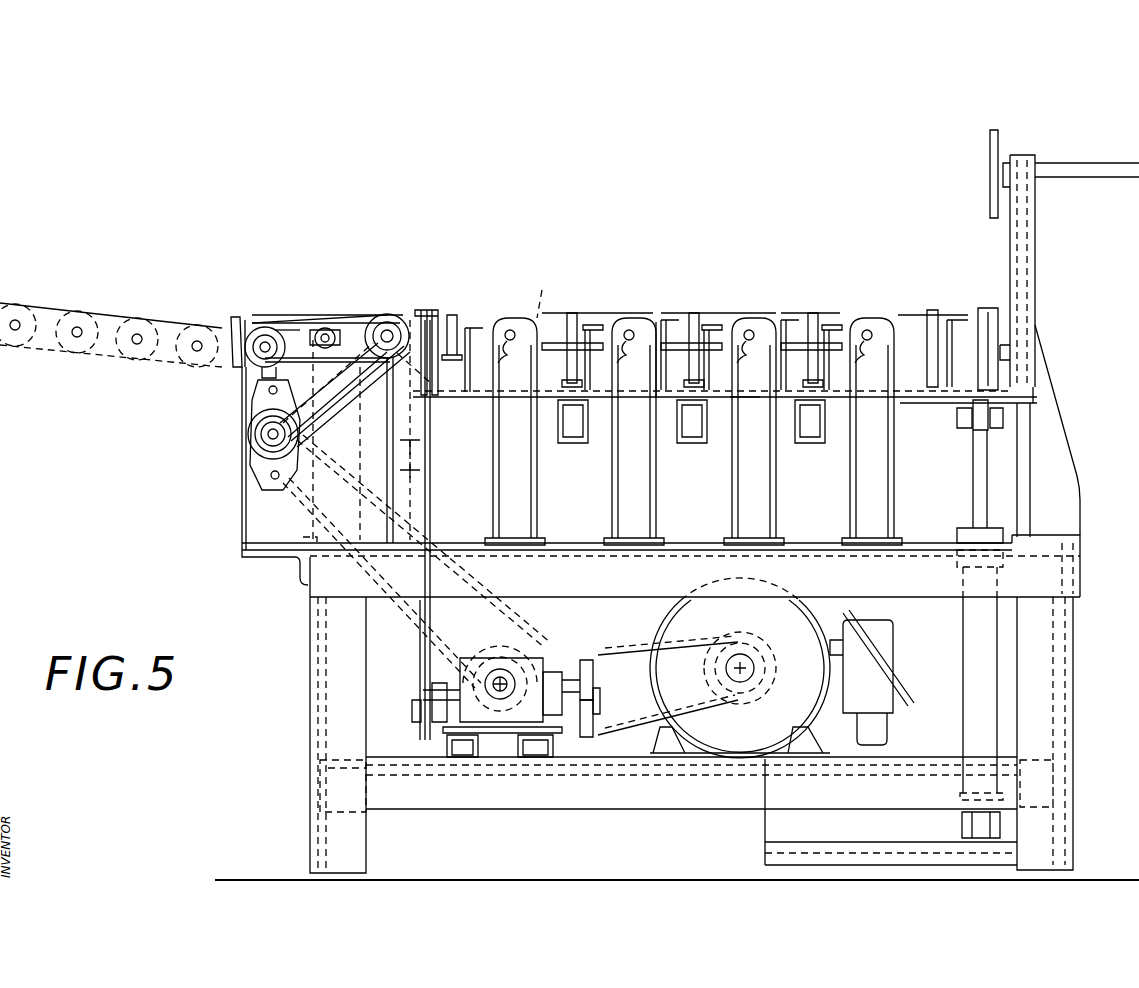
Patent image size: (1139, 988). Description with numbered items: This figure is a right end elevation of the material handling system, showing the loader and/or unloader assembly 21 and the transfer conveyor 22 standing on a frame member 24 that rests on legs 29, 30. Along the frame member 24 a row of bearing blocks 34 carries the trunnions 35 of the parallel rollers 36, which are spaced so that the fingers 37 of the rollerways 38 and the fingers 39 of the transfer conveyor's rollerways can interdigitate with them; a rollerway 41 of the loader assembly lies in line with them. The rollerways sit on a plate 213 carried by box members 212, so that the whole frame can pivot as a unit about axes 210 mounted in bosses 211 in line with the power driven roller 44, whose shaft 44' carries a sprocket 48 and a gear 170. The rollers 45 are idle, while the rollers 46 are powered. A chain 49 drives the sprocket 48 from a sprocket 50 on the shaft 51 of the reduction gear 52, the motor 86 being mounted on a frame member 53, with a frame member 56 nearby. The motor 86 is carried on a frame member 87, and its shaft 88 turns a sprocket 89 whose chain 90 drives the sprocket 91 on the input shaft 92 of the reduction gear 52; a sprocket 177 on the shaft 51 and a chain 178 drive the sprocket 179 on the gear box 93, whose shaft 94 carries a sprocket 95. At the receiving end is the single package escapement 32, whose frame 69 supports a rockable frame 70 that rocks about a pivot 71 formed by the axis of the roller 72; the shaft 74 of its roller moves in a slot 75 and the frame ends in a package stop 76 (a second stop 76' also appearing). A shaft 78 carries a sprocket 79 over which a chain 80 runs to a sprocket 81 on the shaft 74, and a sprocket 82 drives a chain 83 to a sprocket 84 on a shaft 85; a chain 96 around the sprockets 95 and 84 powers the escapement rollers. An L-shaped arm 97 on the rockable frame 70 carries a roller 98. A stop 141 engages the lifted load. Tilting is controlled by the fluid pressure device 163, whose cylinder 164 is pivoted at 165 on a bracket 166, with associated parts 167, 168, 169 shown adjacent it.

The loader and/or unloader assembly 21 is at (1071, 403).
The transfer conveyor 22 is at (1094, 538).
The frame member 24 is at (805, 560).
The leg 29 is at (345, 835).
The leg 30 is at (1065, 722).
The single package escapement 32 is at (293, 271).
The bearing block 34 is at (850, 484).
The trunnion 35 is at (689, 357).
The roller 36 is at (880, 320).
The finger 37 is at (958, 312).
The rollerway 38 is at (955, 318).
The finger 39 is at (772, 318).
The rollerway 41 is at (930, 405).
The power driven roller 44 is at (682, 327).
The shaft 44' is at (819, 331).
The idle roller 45 is at (933, 308).
The power driven roller 46 is at (812, 312).
The sprocket 48 is at (430, 310).
The chain 49 is at (420, 545).
The sprocket 50 is at (428, 686).
The shaft 51 is at (411, 713).
The reduction gear 52 is at (535, 648).
The frame member 53 is at (318, 792).
The frame member 56 is at (298, 578).
The frame 69 is at (245, 522).
The rockable frame 70 is at (222, 368).
The pivot 71 is at (328, 327).
The roller 72 is at (345, 316).
The shaft 74 is at (258, 330).
The slot 75 is at (255, 376).
The package stop 76 is at (114, 320).
The conveyor 76' is at (288, 305).
The shaft 78 is at (388, 314).
The sprocket 79 is at (376, 322).
The chain 80 is at (312, 325).
The sprocket 81 is at (266, 328).
The sprocket 82 is at (396, 316).
The chain 83 is at (325, 418).
The sprocket 84 is at (250, 433).
The shaft 85 is at (255, 440).
The motor 86 is at (738, 625).
The frame member 87 is at (535, 800).
The shaft 88 is at (752, 668).
The sprocket 89 is at (715, 672).
The chain 90 is at (628, 645).
The sprocket 91 is at (590, 672).
The input shaft 92 is at (545, 656).
The gear box 93 is at (530, 650).
The shaft 94 is at (452, 690).
The sprocket 95 is at (480, 652).
The chain 96 is at (418, 640).
The L-shaped arm 97 is at (420, 471).
The roller 98 is at (420, 449).
The stop 141 is at (1003, 128).
The fluid pressure device 163 is at (947, 532).
The cylinder 164 is at (963, 624).
The pivot 165 is at (962, 812).
The bracket 166 is at (935, 832).
The rod 167 is at (973, 487).
The collar 168 is at (965, 430).
The nut 169 is at (962, 408).
The gear 170 is at (540, 287).
The sprocket 177 is at (594, 716).
The chain 178 is at (598, 730).
The sprocket 179 is at (594, 674).
The axis 210 is at (1022, 300).
The boss 211 is at (1005, 330).
The box member 212 is at (812, 443).
The plate 213 is at (738, 400).